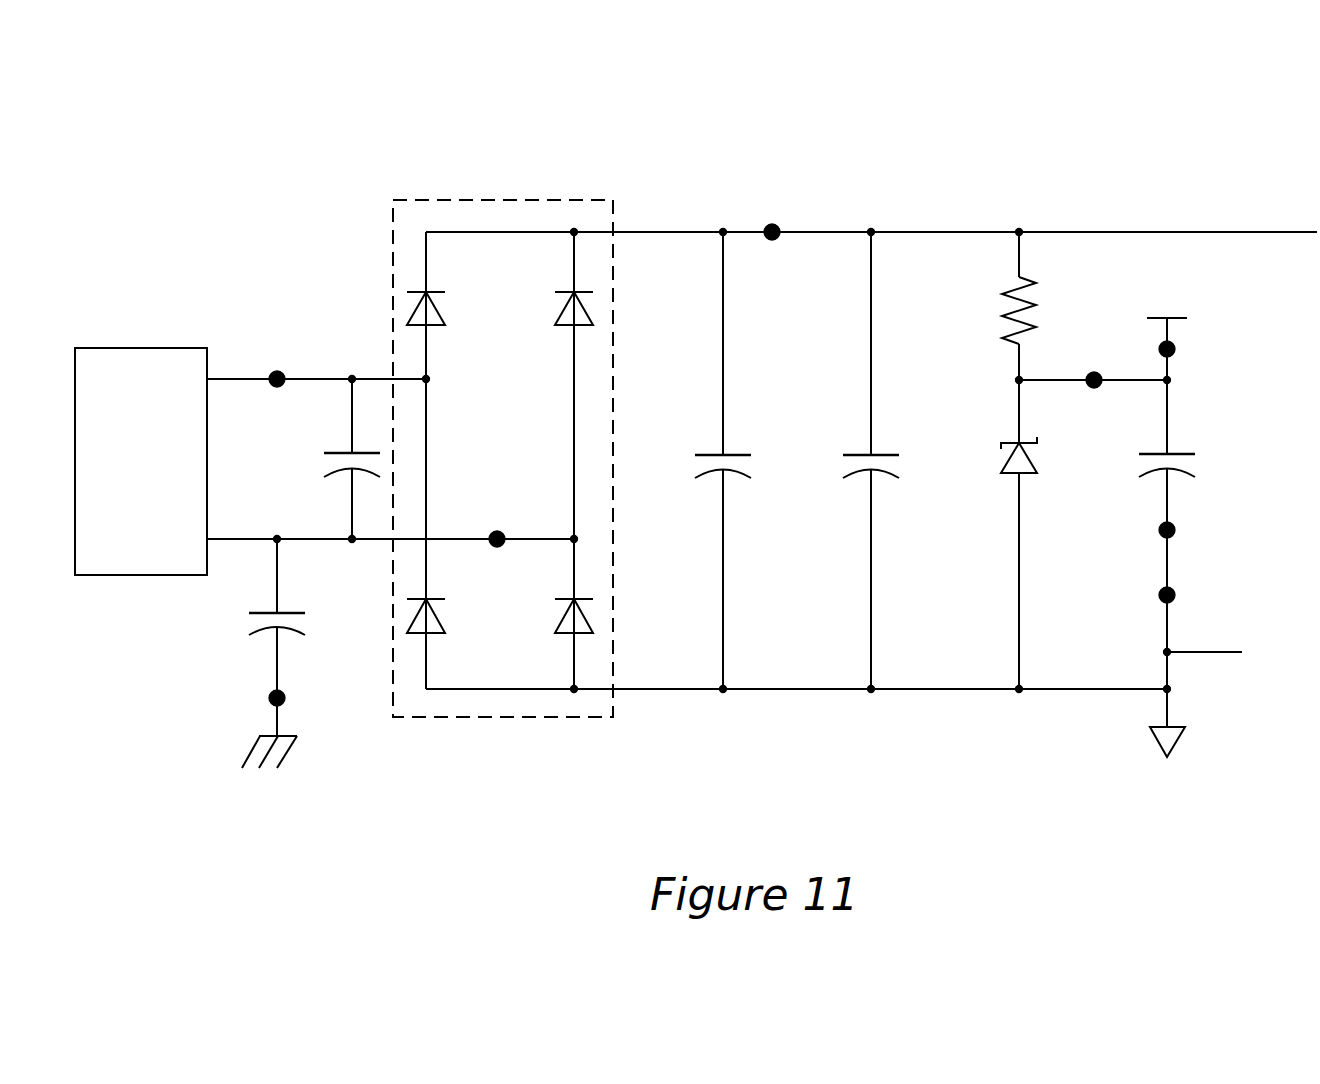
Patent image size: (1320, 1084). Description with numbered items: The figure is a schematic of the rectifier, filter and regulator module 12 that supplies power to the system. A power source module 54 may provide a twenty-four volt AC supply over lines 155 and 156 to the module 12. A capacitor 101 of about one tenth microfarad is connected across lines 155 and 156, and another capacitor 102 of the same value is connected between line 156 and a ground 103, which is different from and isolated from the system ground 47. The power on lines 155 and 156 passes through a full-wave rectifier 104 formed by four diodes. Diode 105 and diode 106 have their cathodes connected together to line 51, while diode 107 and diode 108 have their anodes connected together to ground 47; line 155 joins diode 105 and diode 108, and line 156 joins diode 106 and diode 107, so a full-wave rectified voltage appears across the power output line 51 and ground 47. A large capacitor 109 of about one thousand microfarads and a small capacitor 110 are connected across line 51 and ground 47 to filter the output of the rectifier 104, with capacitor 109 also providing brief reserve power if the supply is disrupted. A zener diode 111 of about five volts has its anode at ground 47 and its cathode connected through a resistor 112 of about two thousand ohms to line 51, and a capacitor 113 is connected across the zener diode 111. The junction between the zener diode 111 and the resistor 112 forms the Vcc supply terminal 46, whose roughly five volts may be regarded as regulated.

The rectifier, filter and regulator module 12 is at (1021, 127).
The Vcc supply terminal 46 is at (1185, 318).
The ground 47 is at (1155, 740).
The power output line 51 is at (1163, 233).
The power source module 54 is at (143, 348).
The capacitor 101 is at (341, 453).
The capacitor 102 is at (262, 634).
The ground 103 is at (286, 762).
The full-wave rectifier 104 is at (490, 200).
The diode 105 is at (431, 291).
The diode 106 is at (583, 291).
The diode 107 is at (583, 598).
The diode 108 is at (431, 598).
The capacitor 109 is at (740, 455).
The capacitor 110 is at (887, 455).
The zener diode 111 is at (1027, 440).
The resistor 112 is at (1034, 301).
The capacitor 113 is at (1183, 454).
The line 155 is at (316, 379).
The line 156 is at (240, 538).